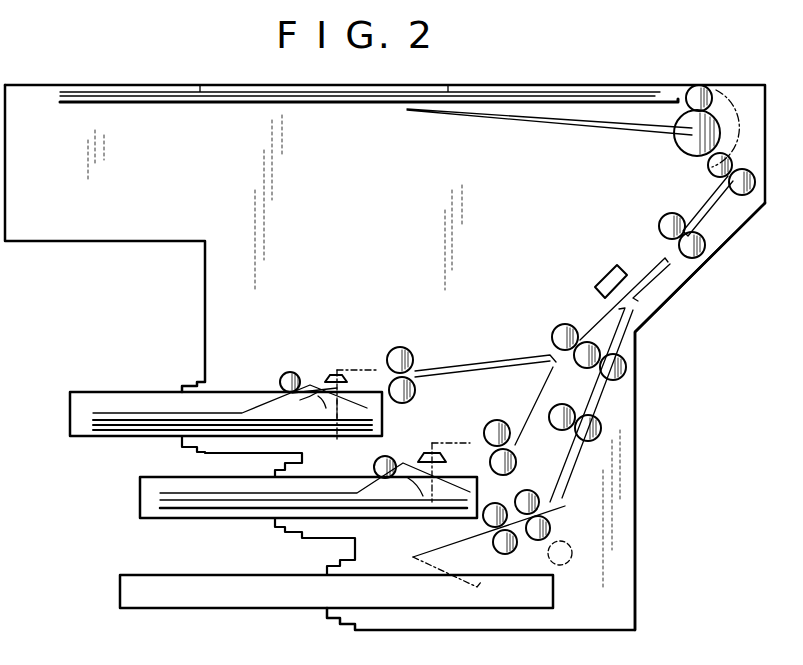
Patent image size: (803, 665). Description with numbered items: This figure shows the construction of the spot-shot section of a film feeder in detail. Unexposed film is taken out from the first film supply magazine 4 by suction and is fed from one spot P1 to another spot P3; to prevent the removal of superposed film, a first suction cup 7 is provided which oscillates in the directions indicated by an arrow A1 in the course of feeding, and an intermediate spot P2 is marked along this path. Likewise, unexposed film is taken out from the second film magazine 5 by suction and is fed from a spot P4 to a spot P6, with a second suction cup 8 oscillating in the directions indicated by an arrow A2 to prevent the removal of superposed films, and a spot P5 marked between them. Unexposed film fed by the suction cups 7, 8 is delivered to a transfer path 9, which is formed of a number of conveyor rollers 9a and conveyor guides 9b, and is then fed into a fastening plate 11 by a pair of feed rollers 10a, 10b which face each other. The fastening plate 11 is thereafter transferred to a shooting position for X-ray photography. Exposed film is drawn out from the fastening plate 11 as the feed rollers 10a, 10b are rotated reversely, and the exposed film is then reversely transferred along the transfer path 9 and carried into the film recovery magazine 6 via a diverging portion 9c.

The first film supply magazine 4 is at (124, 392).
The second film magazine 5 is at (140, 493).
The film recovery magazine 6 is at (120, 590).
The first suction cup 7 is at (323, 380).
The second suction cup 8 is at (420, 455).
The transfer path 9 is at (621, 266).
The conveyor rollers 9a is at (707, 165).
The conveyor guides 9b is at (703, 203).
The diverging portion 9c is at (637, 334).
The feed roller 10a is at (680, 113).
The feed roller 10b is at (700, 85).
The fastening plate 11 is at (472, 112).
The spot P1 is at (339, 430).
The paper stop position P2 is at (337, 370).
The spot P3 is at (376, 368).
The spot P4 is at (423, 507).
The paper stop position P5 is at (432, 445).
The spot P6 is at (470, 445).
The arrow A1 is at (303, 404).
The arrow A2 is at (410, 508).